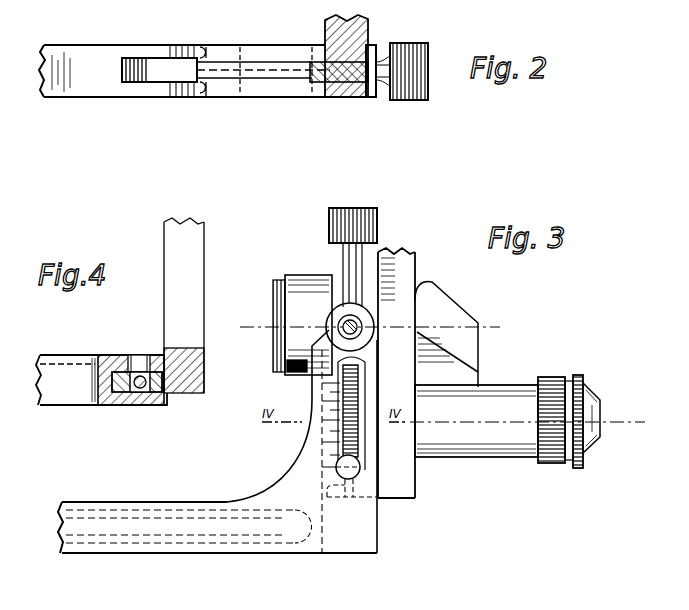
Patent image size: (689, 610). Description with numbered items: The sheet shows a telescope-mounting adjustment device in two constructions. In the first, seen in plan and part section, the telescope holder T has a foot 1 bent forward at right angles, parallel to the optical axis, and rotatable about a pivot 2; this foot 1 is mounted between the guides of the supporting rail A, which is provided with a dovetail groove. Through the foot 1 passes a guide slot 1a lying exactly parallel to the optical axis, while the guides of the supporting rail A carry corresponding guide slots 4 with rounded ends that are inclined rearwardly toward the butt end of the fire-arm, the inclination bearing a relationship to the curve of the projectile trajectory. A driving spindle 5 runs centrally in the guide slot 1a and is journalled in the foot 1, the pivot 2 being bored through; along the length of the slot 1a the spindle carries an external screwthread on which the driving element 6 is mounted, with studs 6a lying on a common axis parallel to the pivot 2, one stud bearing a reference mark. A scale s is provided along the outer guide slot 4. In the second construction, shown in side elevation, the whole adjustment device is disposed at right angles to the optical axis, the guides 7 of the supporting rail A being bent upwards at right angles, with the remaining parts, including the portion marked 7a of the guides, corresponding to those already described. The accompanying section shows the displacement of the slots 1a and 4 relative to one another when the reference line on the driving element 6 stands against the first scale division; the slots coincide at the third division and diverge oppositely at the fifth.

In FIG. 2, the supporting rail A is at (72, 88).
In FIG. 4, the supporting rail A is at (61, 398).
In FIG. 3, the supporting rail A is at (181, 540).
In FIG. 4, the telescope holder T is at (199, 246).
In FIG. 3, the telescope holder T is at (411, 256).
In FIG. 2, the foot 1 is at (266, 57).
In FIG. 4, the guide slot 1a is at (140, 366).
In FIG. 3, the pivot 2 is at (340, 332).
In FIG. 4, the guide slots 4 is at (136, 398).
In FIG. 3, the guide slots 4 is at (362, 380).
In FIG. 2, the driving spindle 5 is at (406, 45).
In FIG. 4, the driving spindle 5 is at (143, 390).
In FIG. 3, the driving spindle 5 is at (354, 209).
In FIG. 3, the driving element 6 is at (360, 462).
In FIG. 2, the studs 6a is at (208, 46).
In FIG. 3, the studs 6a is at (341, 474).
In FIG. 3, the guides 7 is at (318, 339).
In FIG. 3, the guide slot 7a is at (334, 358).
In FIG. 3, the scale s is at (320, 438).